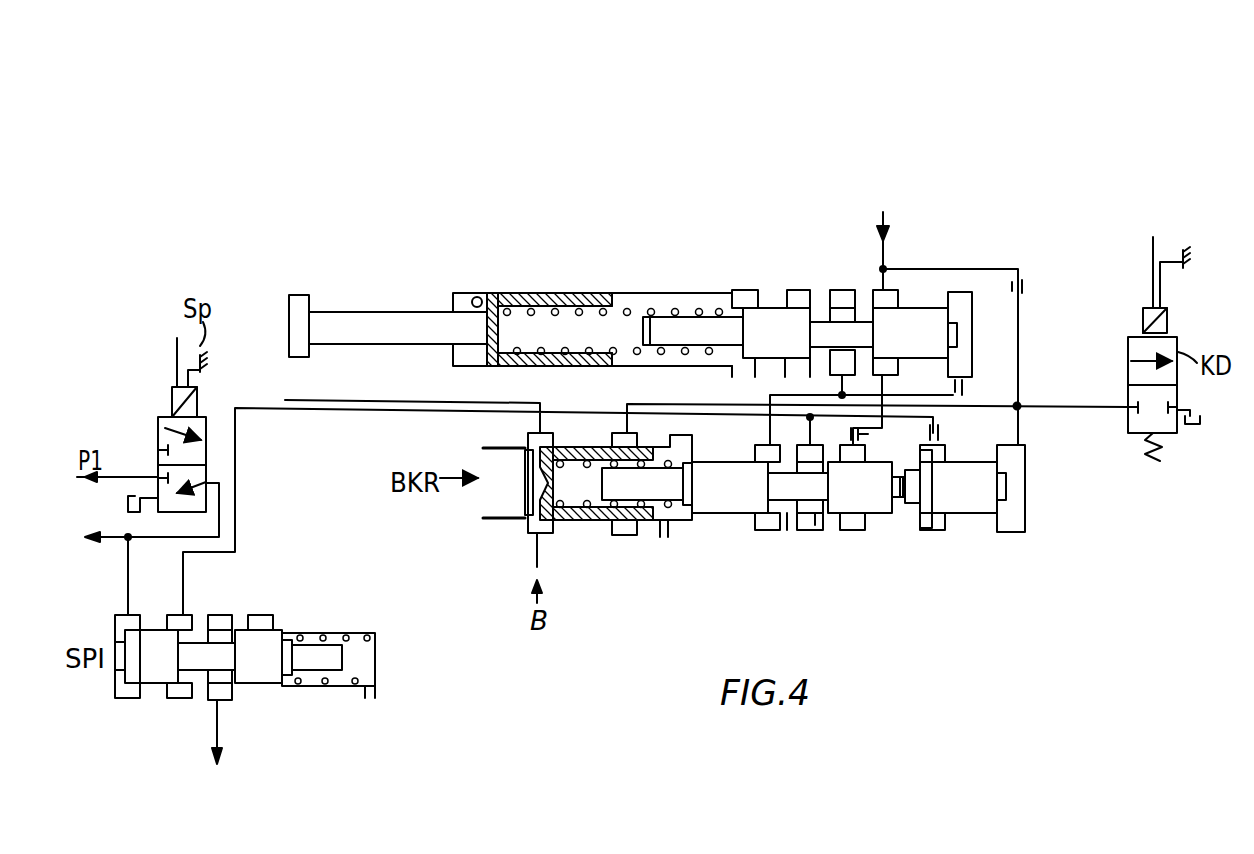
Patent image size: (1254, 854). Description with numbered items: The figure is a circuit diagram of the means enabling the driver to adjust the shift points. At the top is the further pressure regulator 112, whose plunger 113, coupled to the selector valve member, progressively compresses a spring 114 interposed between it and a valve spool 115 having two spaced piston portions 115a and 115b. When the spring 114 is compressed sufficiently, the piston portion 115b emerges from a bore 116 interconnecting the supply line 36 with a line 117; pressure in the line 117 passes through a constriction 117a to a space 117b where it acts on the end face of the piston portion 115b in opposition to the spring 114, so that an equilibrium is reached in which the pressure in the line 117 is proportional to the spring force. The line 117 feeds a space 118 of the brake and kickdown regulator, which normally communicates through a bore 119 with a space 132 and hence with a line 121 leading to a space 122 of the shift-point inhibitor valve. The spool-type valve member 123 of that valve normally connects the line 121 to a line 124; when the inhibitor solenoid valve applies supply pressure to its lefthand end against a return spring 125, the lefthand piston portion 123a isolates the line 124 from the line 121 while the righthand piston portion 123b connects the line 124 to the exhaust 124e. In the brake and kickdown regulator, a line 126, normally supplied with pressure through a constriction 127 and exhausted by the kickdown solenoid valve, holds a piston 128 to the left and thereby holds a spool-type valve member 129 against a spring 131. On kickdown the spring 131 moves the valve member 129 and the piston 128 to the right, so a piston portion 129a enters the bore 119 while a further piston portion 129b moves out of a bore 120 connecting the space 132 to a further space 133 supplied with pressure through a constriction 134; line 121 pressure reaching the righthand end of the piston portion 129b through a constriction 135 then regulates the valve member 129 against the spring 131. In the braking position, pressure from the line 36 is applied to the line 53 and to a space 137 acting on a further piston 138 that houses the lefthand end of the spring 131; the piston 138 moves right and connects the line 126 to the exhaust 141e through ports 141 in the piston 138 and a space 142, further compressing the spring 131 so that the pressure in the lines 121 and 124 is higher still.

The line 36 is at (885, 238).
The line 53 is at (533, 567).
The pressure regulator SPR 112 is at (503, 290).
The plunger 113 is at (363, 328).
The spring 114 is at (583, 300).
The valve spool 115 is at (822, 320).
The piston portion 115a is at (767, 327).
The piston portion 115b is at (917, 325).
The bore 116 is at (860, 315).
The line 117 is at (770, 397).
The constriction 117a is at (963, 387).
The space 117b is at (963, 367).
The space 118 is at (762, 527).
The bore 119 is at (787, 530).
The bore 120 is at (815, 513).
The line 121 is at (275, 412).
The space 122 is at (180, 690).
The valve member 123 is at (200, 650).
The piston portion 123a is at (140, 670).
The piston portion 123b is at (253, 660).
The line 124 is at (220, 725).
The exhaust 124e is at (277, 612).
The return spring 125 is at (357, 683).
The line 126 is at (1018, 318).
The constriction 127 is at (1043, 272).
The piston 128 is at (967, 493).
The valve member 129 is at (817, 488).
The piston portion 129a is at (720, 477).
The piston portion 129b is at (883, 502).
The spring 131 is at (533, 490).
The space 132 is at (800, 512).
The space 133 is at (855, 455).
The constriction 134 is at (862, 438).
The constriction 135 is at (940, 432).
The space 137 is at (535, 528).
The piston 138 is at (565, 523).
The ports 141 is at (594, 458).
The exhaust 141e is at (678, 528).
The space 142 is at (622, 528).